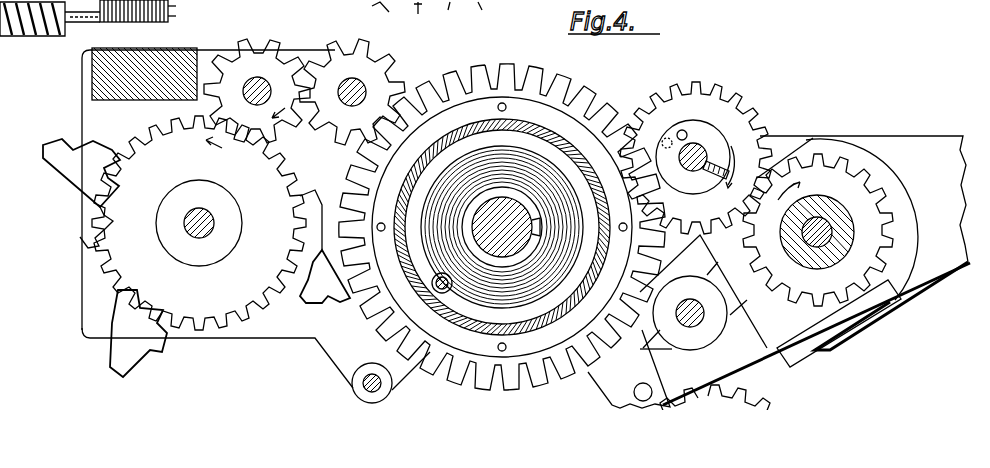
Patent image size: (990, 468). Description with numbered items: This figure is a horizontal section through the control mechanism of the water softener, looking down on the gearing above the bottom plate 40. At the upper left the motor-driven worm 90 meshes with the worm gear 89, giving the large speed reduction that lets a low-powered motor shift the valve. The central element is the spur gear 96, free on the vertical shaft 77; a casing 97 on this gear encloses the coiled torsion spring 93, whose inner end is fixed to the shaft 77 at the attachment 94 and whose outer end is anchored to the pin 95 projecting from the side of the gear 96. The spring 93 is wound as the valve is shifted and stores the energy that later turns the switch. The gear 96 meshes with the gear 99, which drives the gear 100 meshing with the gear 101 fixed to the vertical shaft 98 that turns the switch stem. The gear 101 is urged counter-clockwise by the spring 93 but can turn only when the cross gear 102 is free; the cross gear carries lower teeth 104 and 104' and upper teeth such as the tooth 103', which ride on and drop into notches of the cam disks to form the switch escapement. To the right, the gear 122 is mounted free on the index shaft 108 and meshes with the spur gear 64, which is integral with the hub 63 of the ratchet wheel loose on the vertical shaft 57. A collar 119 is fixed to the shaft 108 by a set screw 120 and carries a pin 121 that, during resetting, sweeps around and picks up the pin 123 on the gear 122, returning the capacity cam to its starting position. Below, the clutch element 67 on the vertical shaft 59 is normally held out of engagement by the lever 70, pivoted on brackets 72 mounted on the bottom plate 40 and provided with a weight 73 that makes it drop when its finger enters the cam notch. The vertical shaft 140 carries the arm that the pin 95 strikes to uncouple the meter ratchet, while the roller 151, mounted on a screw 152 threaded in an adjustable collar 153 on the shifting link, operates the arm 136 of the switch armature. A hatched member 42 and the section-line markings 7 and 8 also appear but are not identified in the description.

The worm gear 89 is at (176, 10).
The worm 90 is at (32, 30).
The block 42 is at (108, 68).
The gear 100 is at (278, 44).
The gear 99 is at (390, 58).
The vertical shaft 98 is at (206, 216).
The spur gear 96 is at (458, 372).
The casing 97 is at (568, 300).
The coiled torsion spring 93 is at (531, 289).
The inner end fixing of spring 94 is at (540, 227).
The pin 95 is at (450, 292).
The vertical shaft 77 is at (508, 212).
The gear 122 is at (681, 90).
The pin 121 is at (712, 122).
The pin 123 is at (667, 137).
The collar 119 is at (722, 140).
The set screw 120 is at (708, 179).
The index shaft 108 is at (702, 168).
The bottom plate 40 is at (856, 136).
The vertical shaft 57 is at (810, 226).
The spur gear 64 is at (882, 241).
The hub 63 is at (843, 263).
The clutch element 67 is at (717, 320).
The vertical shaft 59 is at (692, 328).
The lever 70 is at (727, 353).
The brackets 72 is at (803, 348).
The weight 73 is at (603, 387).
The vertical shaft 140 is at (352, 385).
The gear 101 is at (84, 221).
The cross gear 102 is at (315, 252).
The lower tooth 104 is at (325, 293).
The lower tooth 104' is at (71, 193).
The upper tooth 103' is at (140, 344).
The arm 136 is at (389, 16).
The screw 152 is at (419, 17).
The roller 151 is at (449, 15).
The collar 153 is at (482, 13).
The section line 7 is at (646, 130).
The section line 8 is at (890, 185).